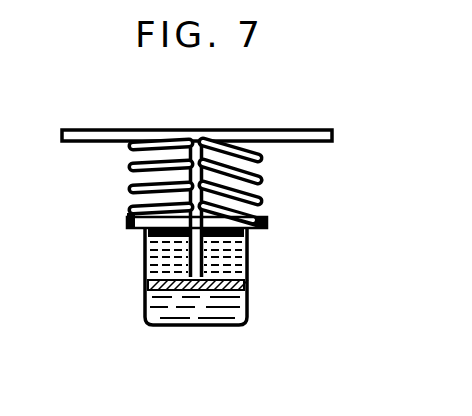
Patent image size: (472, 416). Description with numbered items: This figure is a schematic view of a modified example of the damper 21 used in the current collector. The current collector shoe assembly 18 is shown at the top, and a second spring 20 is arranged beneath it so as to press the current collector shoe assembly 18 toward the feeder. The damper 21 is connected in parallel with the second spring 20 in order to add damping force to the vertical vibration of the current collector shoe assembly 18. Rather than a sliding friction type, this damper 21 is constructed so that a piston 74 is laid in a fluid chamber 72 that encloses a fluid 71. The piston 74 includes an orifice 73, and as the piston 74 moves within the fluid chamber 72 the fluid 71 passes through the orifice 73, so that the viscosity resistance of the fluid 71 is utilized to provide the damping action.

The current collector shoe assembly 18 is at (320, 130).
The second spring 20 is at (257, 202).
The fluid 71 is at (245, 242).
The damper 21 is at (134, 265).
The fluid chamber 72 is at (247, 262).
The orifice 73 is at (165, 292).
The piston 74 is at (188, 292).